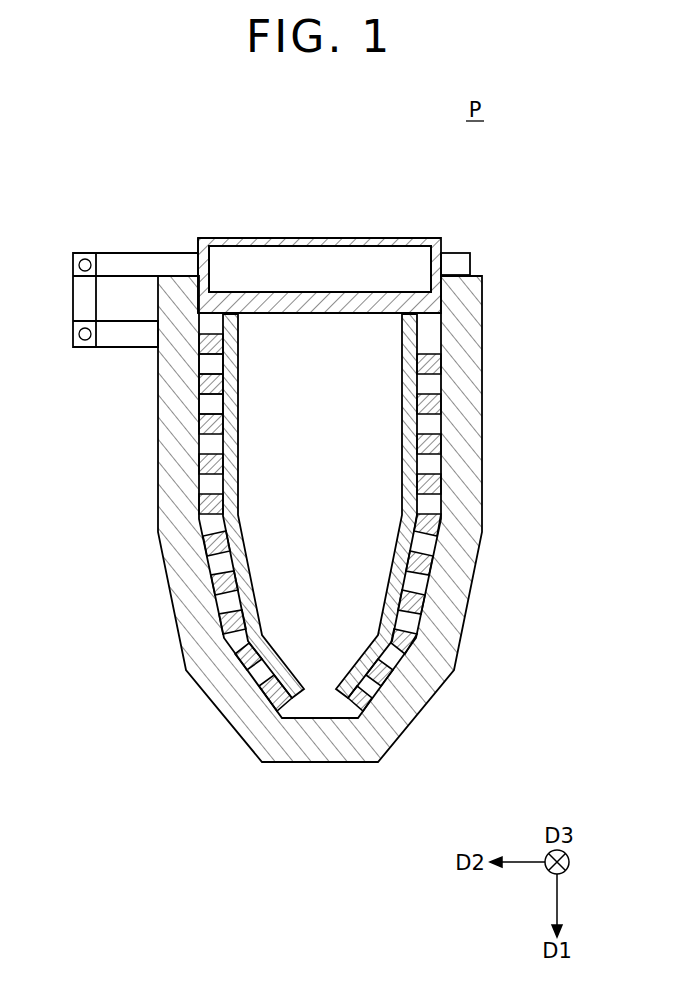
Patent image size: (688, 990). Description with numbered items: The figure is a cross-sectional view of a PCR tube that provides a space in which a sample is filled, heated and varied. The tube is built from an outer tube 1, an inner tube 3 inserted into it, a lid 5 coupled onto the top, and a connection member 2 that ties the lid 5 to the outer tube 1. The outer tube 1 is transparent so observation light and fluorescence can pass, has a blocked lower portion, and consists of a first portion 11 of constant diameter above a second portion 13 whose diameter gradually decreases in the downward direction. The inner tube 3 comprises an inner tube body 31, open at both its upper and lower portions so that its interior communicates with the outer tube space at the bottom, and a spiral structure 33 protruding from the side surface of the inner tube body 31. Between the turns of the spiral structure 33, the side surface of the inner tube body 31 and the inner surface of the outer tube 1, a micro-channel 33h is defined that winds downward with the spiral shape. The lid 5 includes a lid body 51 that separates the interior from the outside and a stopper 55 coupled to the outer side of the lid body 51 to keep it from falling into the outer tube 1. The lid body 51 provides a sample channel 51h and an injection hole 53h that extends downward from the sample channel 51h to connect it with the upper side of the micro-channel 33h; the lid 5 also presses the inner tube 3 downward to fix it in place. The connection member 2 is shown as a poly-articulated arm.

The outer tube 1 is at (371, 519).
The connection member 2 is at (80, 288).
The inner tube 3 is at (332, 512).
The lid 5 is at (331, 225).
The first portion 11 is at (468, 482).
The second portion 13 is at (550, 472).
The inner tube body 31 is at (410, 387).
The spiral structure 33 is at (430, 407).
The micro-channel 33h is at (207, 405).
The lid body 51 is at (365, 242).
The sample channel 51h is at (296, 263).
The injection hole 53h is at (212, 302).
The stopper 55 is at (455, 229).